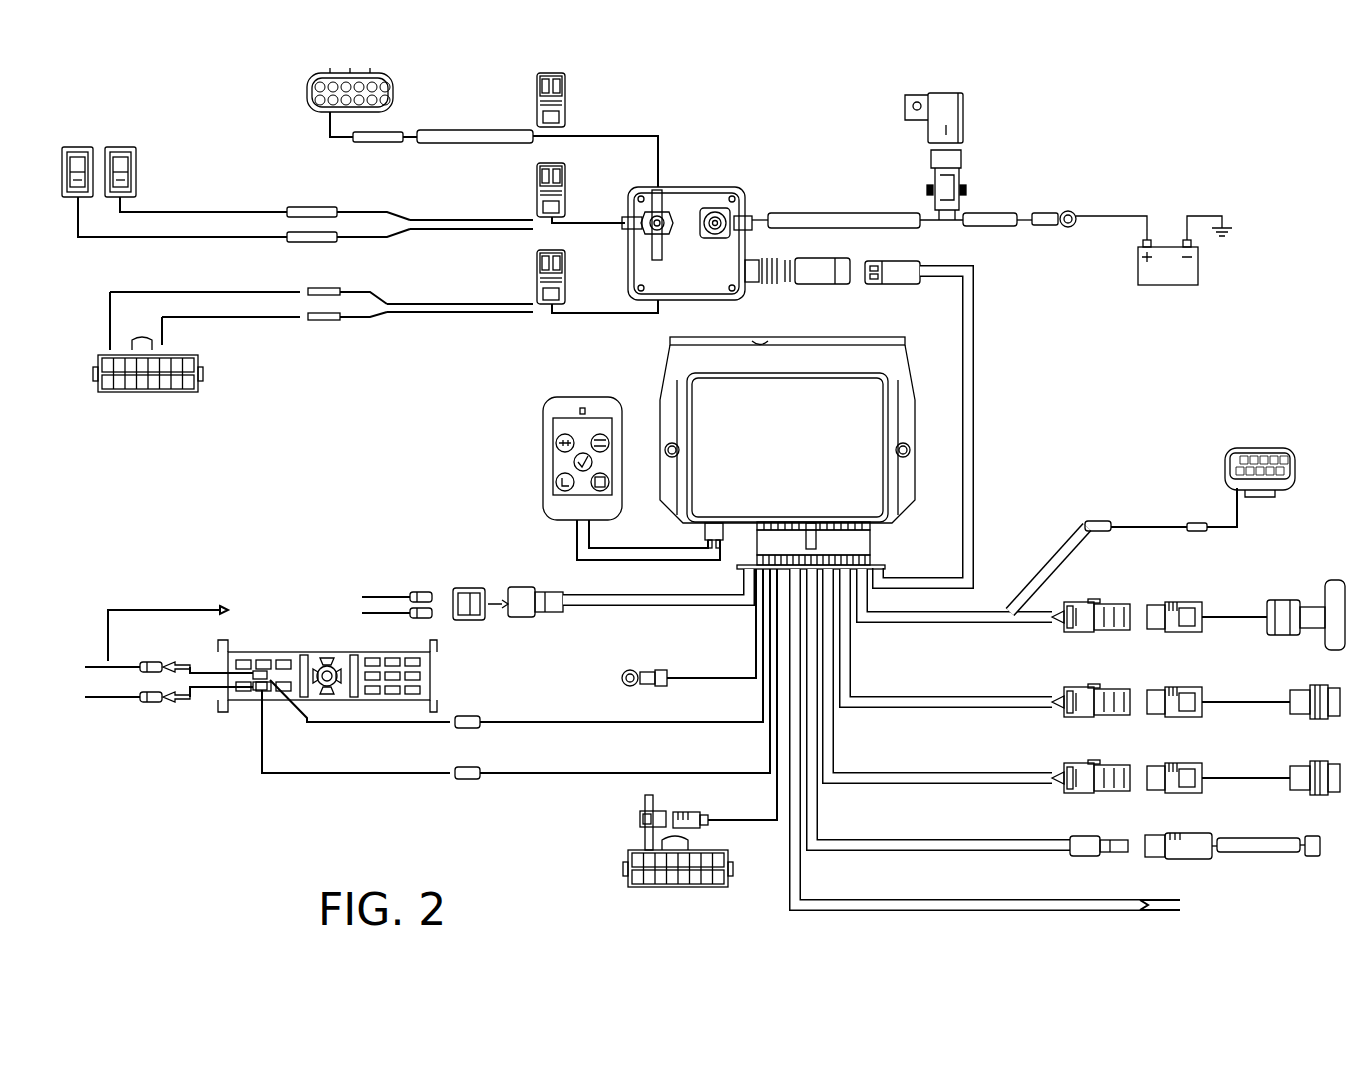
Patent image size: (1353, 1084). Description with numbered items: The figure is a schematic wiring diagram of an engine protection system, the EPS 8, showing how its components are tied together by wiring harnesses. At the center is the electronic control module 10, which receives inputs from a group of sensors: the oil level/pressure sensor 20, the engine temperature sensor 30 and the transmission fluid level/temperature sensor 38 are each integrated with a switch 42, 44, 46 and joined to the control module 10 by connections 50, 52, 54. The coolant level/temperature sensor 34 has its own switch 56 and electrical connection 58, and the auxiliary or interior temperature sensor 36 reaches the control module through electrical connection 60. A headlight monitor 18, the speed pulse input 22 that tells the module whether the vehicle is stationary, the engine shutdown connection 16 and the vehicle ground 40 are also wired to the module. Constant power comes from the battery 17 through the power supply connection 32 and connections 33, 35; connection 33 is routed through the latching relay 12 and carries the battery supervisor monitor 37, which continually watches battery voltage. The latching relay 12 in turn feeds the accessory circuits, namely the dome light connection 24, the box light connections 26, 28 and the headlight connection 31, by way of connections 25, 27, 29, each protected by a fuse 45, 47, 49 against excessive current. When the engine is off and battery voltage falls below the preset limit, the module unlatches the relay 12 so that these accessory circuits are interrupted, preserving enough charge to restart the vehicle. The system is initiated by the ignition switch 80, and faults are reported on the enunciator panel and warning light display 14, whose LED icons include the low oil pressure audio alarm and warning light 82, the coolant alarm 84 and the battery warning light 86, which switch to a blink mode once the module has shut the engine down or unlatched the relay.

The EPS 8 is at (1150, 116).
The electronic control module 10 is at (926, 432).
The latching relay 12 is at (710, 188).
The enunciator panel and warning light display 14 is at (545, 451).
The engine shutdown connection 16 is at (438, 678).
The battery 17 is at (1180, 287).
The headlight monitor 18 is at (648, 893).
The oil level/pressure sensor 20 is at (1284, 600).
The speed pulse input 22 is at (1243, 511).
The dome light connection 24 is at (395, 92).
The connection 25 is at (610, 133).
The box light connection 26 is at (125, 146).
The connection 27 is at (588, 218).
The box light connection 28 is at (82, 145).
The connection 29 is at (588, 304).
The engine temperature sensor 30 is at (1268, 699).
The headlight connection 31 is at (162, 395).
The power supply connection 32 is at (1065, 210).
The connection 33 is at (826, 212).
The coolant level/temperature sensor 34 is at (1275, 841).
The connection 35 is at (907, 279).
The auxiliary or interior temperature sensor 36 is at (1165, 918).
The battery supervisor monitor 37 is at (966, 112).
The transmission fluid level/temperature sensor 38 is at (1270, 776).
The vehicle ground 40 is at (622, 672).
The switch 42 is at (1108, 603).
The switch 44 is at (1108, 689).
The fuse 45 is at (566, 81).
The switch 46 is at (1103, 766).
The fuse 47 is at (537, 174).
The fuse 49 is at (537, 263).
The connection 50 is at (963, 633).
The connection 52 is at (945, 713).
The connection 54 is at (925, 791).
The switch 56 is at (1100, 862).
The electrical connection 58 is at (918, 861).
The electrical connection 60 is at (898, 919).
The ignition switch 80 is at (462, 588).
The low oil pressure audio alarm and warning light 82 is at (558, 437).
The coolant alarm 84 is at (601, 433).
The battery warning light 86 is at (605, 488).